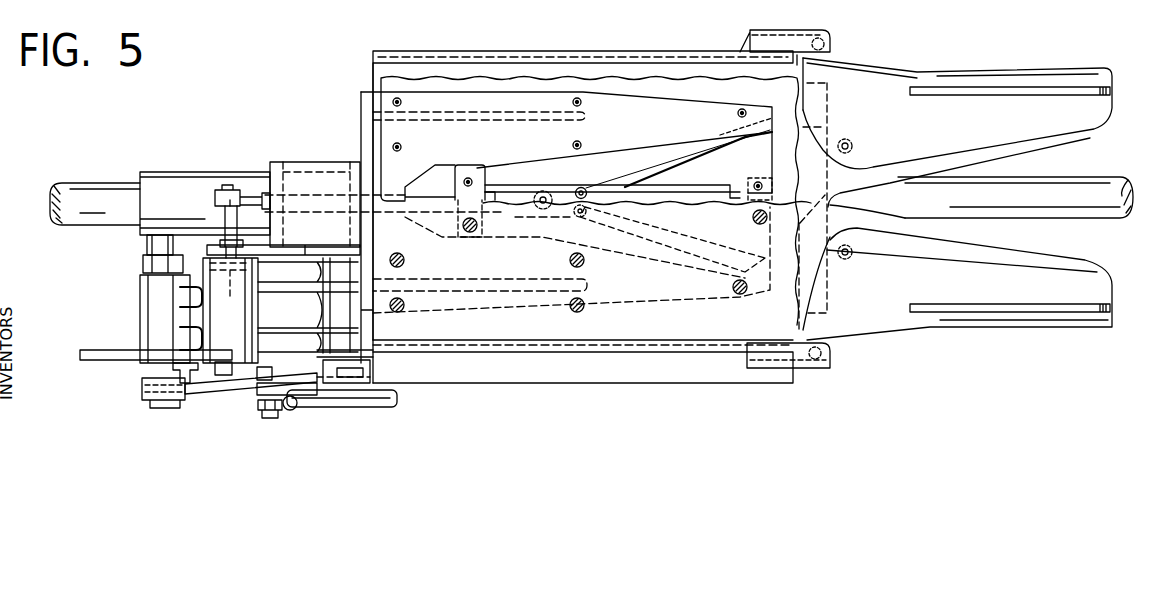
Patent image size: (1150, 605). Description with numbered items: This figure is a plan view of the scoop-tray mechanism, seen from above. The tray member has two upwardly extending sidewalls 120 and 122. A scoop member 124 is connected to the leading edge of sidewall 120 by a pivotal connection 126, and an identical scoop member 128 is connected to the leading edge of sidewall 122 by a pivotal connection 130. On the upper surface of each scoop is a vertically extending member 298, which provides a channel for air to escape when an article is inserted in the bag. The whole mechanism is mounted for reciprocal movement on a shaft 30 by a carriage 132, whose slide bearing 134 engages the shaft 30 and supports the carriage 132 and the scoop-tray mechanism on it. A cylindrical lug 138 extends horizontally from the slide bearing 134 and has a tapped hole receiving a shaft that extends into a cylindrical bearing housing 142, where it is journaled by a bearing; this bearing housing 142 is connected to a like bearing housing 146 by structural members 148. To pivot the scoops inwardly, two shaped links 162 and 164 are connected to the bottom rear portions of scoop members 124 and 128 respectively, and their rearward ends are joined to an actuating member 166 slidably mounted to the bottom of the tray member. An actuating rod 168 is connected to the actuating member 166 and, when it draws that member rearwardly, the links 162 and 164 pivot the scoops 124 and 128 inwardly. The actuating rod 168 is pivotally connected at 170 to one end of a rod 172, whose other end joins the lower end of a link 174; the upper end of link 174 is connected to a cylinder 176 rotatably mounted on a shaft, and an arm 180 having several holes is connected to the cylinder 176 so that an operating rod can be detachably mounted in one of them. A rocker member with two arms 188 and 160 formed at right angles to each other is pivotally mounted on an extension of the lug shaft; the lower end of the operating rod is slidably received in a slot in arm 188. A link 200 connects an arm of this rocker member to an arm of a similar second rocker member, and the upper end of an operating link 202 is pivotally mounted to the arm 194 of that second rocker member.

The shaft 30 is at (1085, 176).
The sidewall 120 is at (640, 52).
The sidewall 122 is at (638, 352).
The scoop member 124 is at (990, 68).
The pivotal connection 126 is at (832, 30).
The scoop member 128 is at (955, 326).
The pivotal connection 130 is at (832, 368).
The carriage 132 is at (286, 148).
The slide bearing 134 is at (190, 174).
The cylindrical lug 138 is at (146, 247).
The cylindrical bearing housing 142 is at (140, 300).
The bearing housing 146 is at (318, 305).
The structural members 148 is at (310, 286).
The arm 160 is at (142, 396).
The shaped link 162 is at (678, 158).
The shaped link 164 is at (708, 272).
The actuating member 166 is at (688, 188).
The actuating rod 168 is at (337, 197).
The pivotal connection 170 is at (214, 190).
The rod 172 is at (222, 215).
The link 174 is at (230, 310).
The cylinder 176 is at (255, 338).
The arm 180 is at (115, 350).
The arm 188 is at (268, 374).
The arm 194 is at (300, 397).
The link 200 is at (226, 396).
The operating link 202 is at (395, 404).
The vertically extending member 298 is at (1068, 85).